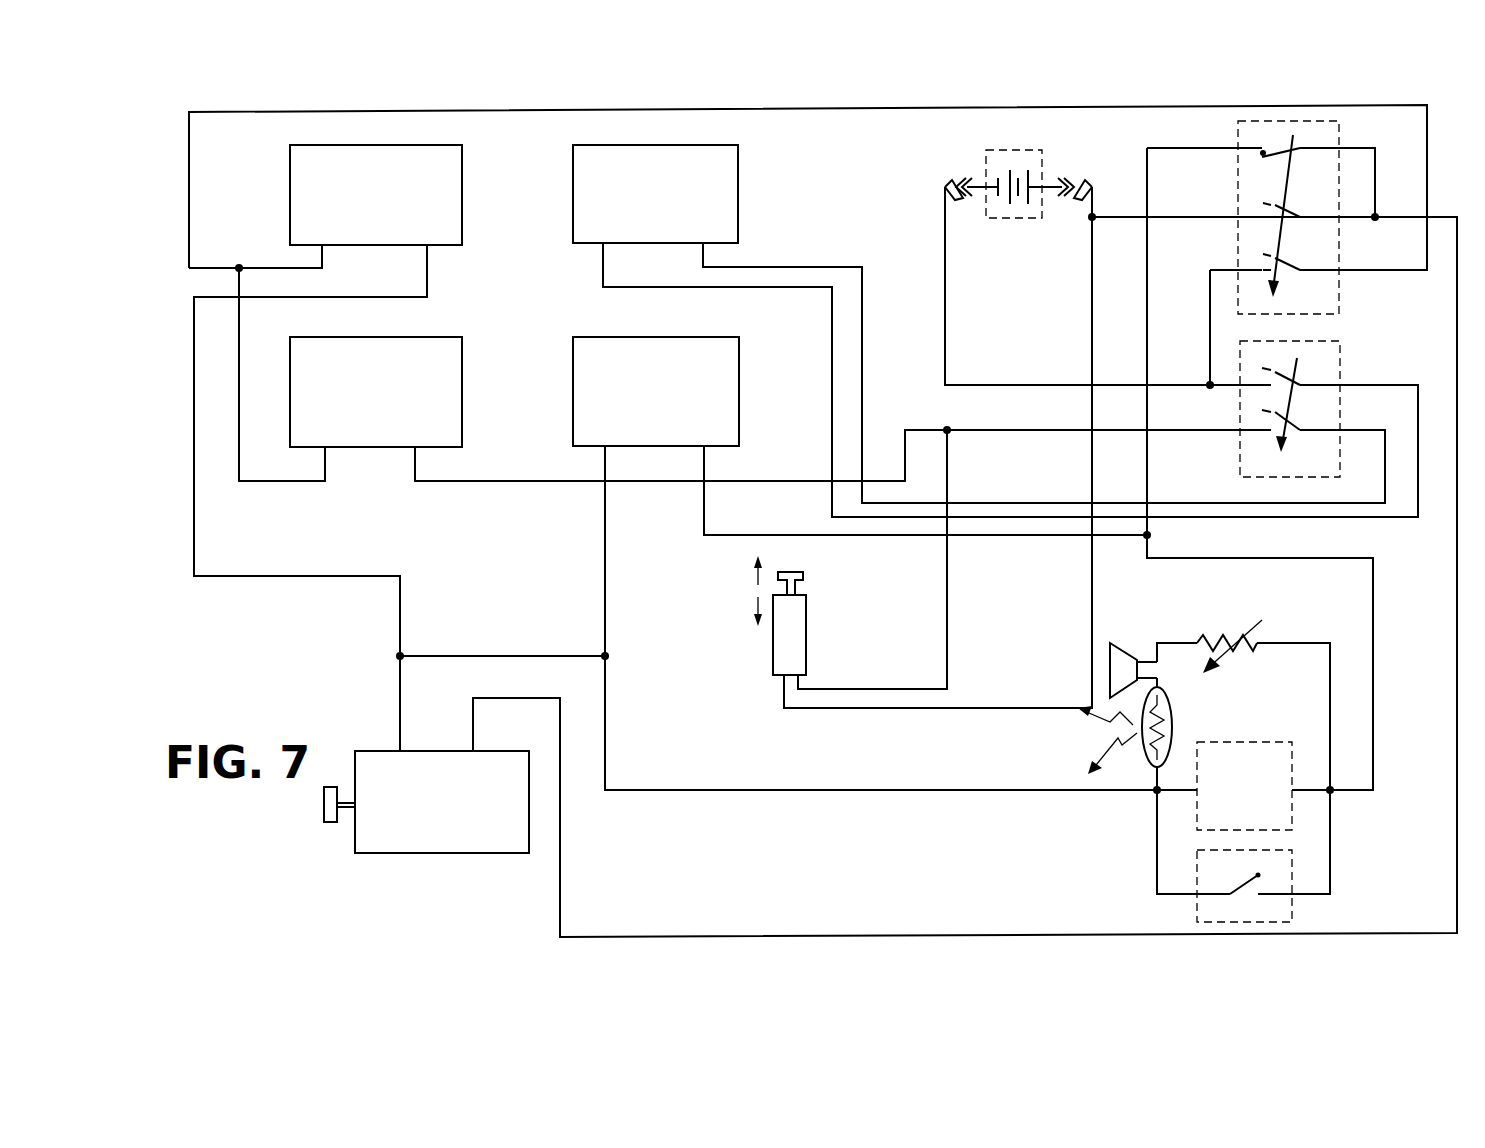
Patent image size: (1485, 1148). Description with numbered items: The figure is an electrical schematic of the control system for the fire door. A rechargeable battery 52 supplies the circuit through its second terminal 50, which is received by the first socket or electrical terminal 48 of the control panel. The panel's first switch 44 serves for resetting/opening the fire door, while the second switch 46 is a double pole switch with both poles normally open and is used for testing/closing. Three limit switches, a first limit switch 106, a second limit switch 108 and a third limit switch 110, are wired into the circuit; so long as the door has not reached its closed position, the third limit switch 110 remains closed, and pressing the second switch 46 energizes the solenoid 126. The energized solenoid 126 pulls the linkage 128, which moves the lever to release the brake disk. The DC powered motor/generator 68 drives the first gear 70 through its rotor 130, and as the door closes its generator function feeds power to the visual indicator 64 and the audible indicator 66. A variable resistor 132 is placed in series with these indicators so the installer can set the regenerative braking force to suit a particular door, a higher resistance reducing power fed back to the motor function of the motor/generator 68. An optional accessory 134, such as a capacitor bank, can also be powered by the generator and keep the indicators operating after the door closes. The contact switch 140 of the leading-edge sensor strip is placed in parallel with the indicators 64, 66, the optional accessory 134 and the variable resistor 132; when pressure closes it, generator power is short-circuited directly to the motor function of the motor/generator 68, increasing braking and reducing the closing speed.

The first switch 44 is at (1339, 290).
The second switch 46 is at (1340, 368).
The first socket or electrical terminal 48 is at (958, 180).
The second terminal 50 is at (968, 180).
The rechargeable battery 52 is at (1015, 150).
The visual indicator 64 is at (1173, 715).
The audible indicator 66 is at (1115, 650).
The motor/generator 68 is at (480, 853).
The first gear 70 is at (328, 822).
The first limit switch 106 is at (462, 180).
The second limit switch 108 is at (739, 383).
The third limit switch 110 is at (738, 175).
The solenoid 126 is at (806, 630).
The linkage 128 is at (803, 578).
The rotor 130 is at (345, 808).
The variable resistor 132 is at (1228, 640).
The optional accessory 134 is at (1240, 742).
The contact switch 140 is at (1292, 905).